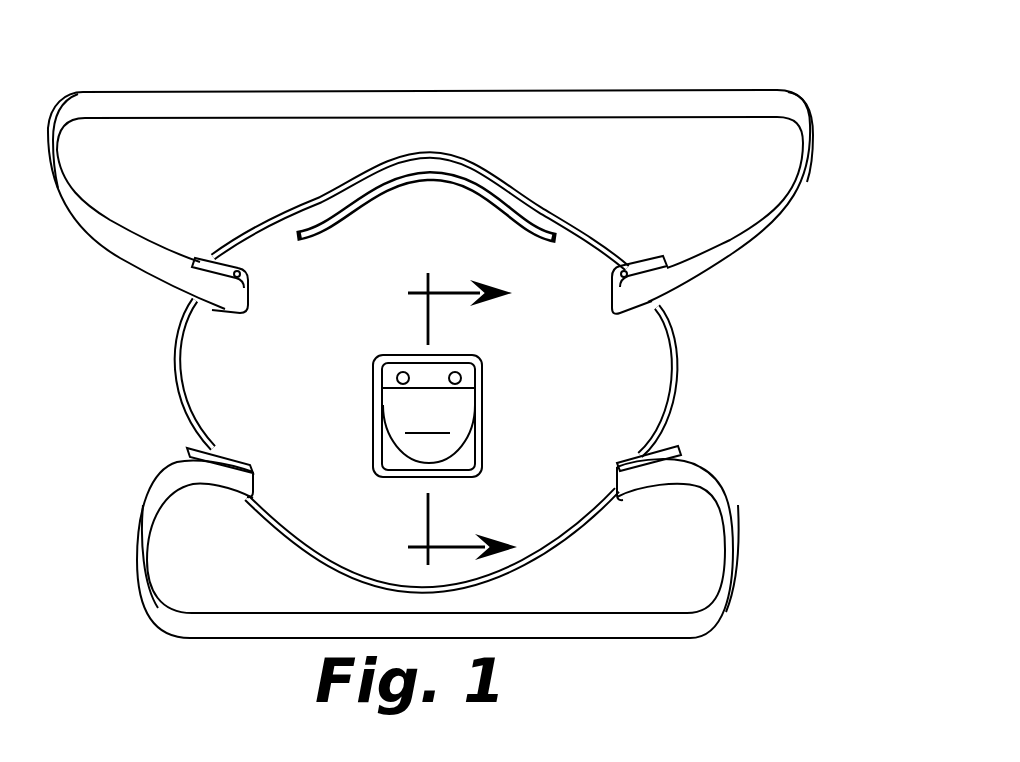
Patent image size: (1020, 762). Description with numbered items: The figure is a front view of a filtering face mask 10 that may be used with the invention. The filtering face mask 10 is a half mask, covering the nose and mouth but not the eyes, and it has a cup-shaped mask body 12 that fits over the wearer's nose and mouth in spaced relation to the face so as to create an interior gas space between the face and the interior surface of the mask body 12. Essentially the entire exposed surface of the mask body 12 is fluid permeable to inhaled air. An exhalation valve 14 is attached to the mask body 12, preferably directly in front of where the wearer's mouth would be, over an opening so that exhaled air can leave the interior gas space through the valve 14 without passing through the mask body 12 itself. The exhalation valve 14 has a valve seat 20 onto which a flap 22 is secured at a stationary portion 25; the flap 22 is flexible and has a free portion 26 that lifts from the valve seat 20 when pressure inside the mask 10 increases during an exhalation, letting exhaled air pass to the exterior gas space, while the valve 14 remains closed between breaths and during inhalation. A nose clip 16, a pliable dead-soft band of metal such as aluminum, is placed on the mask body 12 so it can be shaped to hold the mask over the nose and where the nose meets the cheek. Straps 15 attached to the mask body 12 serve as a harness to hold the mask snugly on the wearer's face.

The filtering face mask 10 is at (468, 322).
The mask body 12 is at (698, 367).
The exhalation valve 14 is at (429, 386).
The straps 15 is at (808, 184).
The nose clip 16 is at (521, 226).
The valve seat 20 is at (508, 401).
The flap 22 is at (428, 416).
The stationary portion 25 is at (423, 375).
The free portion 26 is at (436, 452).